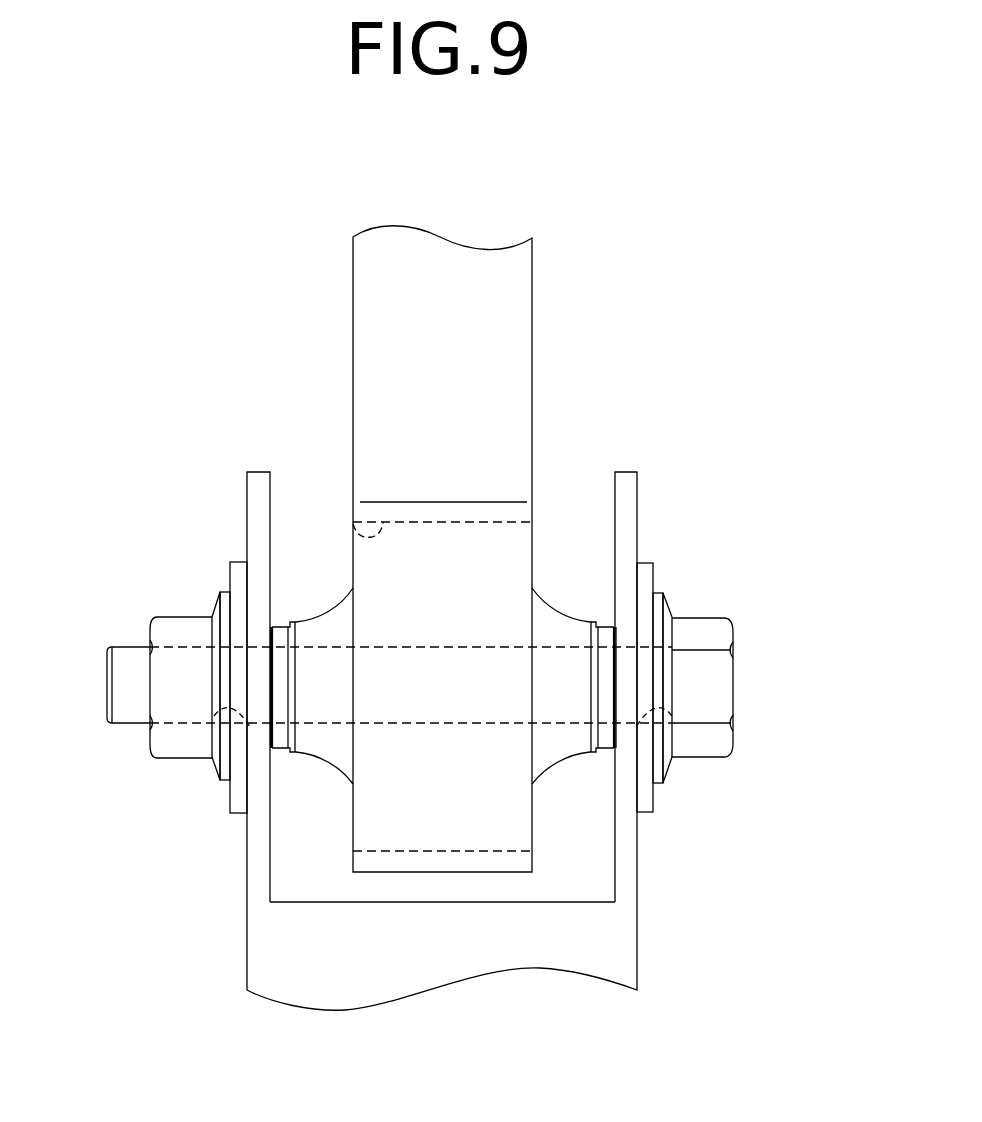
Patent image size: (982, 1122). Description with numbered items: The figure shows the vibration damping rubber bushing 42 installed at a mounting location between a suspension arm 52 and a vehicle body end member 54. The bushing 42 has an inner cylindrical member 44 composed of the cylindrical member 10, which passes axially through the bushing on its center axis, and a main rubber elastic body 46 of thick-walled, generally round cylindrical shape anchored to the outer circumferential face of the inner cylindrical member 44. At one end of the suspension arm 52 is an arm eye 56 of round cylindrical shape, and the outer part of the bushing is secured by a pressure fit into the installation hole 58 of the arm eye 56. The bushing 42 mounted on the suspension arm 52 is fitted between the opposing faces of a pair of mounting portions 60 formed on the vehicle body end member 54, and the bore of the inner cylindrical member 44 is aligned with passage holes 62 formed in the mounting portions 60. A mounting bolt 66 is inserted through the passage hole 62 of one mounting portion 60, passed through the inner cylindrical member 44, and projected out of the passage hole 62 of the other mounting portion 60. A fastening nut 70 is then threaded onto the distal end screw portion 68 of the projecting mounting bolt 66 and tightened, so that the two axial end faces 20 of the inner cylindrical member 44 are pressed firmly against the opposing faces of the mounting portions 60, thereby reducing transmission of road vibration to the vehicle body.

The suspension arm 52 is at (333, 335).
The installation hole 58 is at (352, 533).
The arm eye 56 is at (462, 860).
The mounting portions 60 is at (258, 503).
The vehicle body end member 54 is at (232, 927).
The main rubber elastic body 46 is at (558, 632).
The vibration damping rubber bushing 42 is at (582, 810).
The inner cylindrical member 44 is at (540, 667).
The cylindrical member 10 is at (615, 635).
The axial end faces 20 is at (248, 659).
The passage holes 62 is at (208, 735).
The fastening nut 70 is at (135, 746).
The distal end screw portion 68 is at (132, 688).
The mounting bolt 66 is at (750, 708).